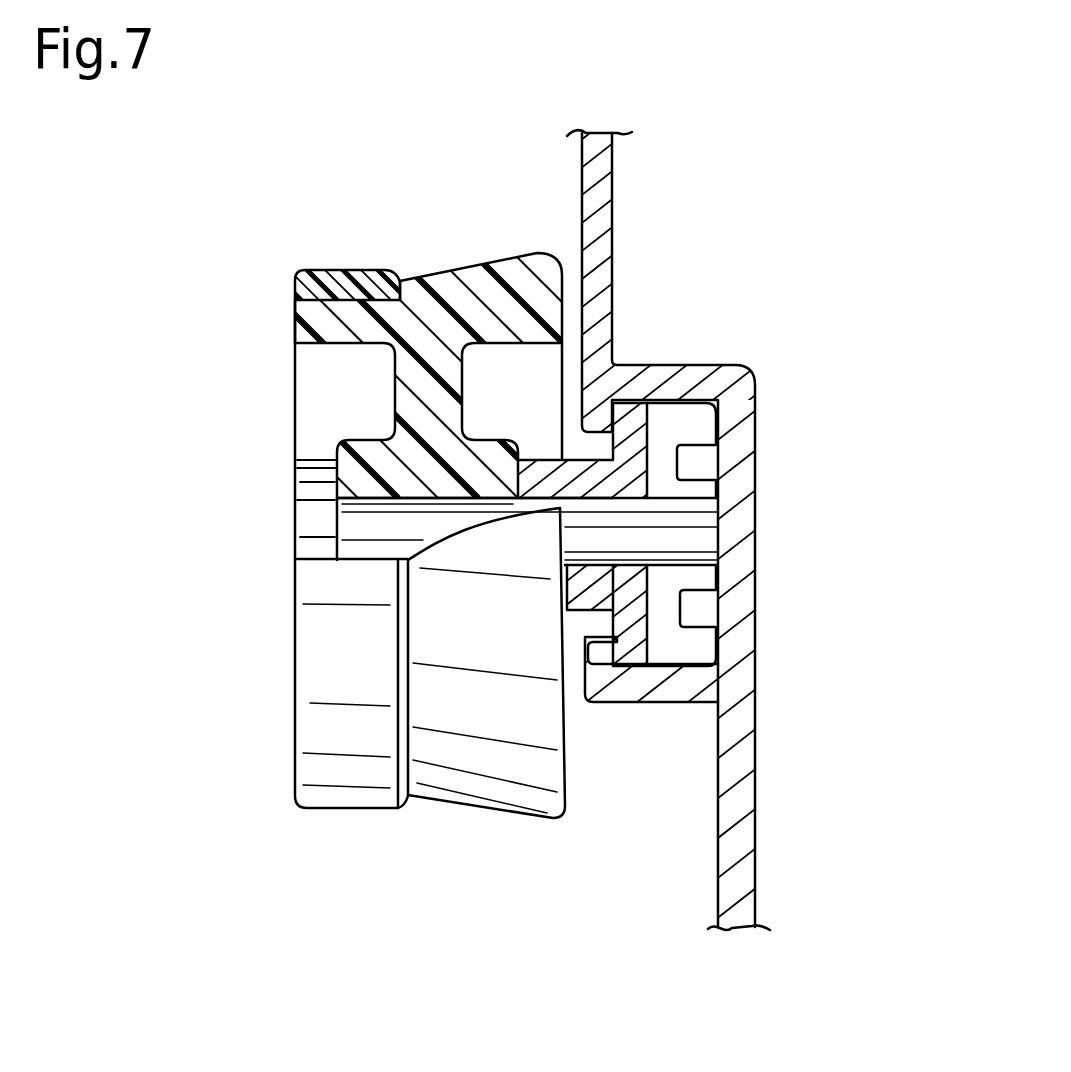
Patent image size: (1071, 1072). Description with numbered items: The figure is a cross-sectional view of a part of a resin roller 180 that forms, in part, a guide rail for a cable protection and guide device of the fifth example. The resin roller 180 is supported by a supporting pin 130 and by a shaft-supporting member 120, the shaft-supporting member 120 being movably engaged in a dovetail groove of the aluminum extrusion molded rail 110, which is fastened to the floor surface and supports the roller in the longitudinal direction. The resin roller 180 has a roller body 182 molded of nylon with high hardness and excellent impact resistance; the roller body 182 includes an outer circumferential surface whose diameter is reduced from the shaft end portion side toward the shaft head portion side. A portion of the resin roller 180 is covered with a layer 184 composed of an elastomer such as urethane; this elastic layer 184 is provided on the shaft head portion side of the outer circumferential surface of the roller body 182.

The aluminum extrusion molded rail 110 is at (742, 838).
The shaft-supporting member 120 is at (630, 430).
The supporting pin 130 is at (317, 509).
The resin roller 180 is at (435, 589).
The roller body 182 is at (312, 320).
The layer 184 is at (347, 282).